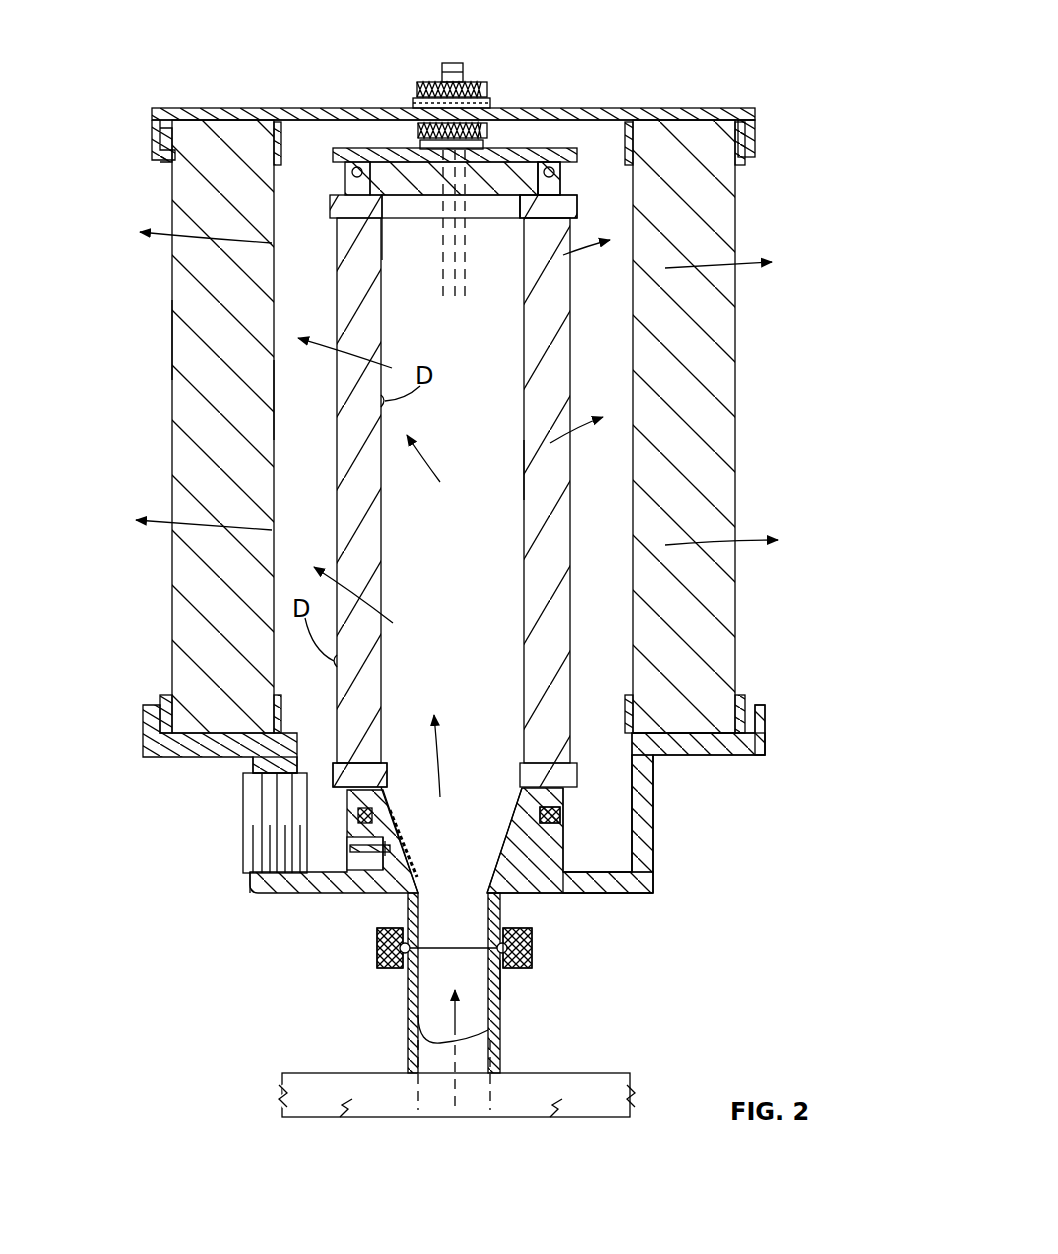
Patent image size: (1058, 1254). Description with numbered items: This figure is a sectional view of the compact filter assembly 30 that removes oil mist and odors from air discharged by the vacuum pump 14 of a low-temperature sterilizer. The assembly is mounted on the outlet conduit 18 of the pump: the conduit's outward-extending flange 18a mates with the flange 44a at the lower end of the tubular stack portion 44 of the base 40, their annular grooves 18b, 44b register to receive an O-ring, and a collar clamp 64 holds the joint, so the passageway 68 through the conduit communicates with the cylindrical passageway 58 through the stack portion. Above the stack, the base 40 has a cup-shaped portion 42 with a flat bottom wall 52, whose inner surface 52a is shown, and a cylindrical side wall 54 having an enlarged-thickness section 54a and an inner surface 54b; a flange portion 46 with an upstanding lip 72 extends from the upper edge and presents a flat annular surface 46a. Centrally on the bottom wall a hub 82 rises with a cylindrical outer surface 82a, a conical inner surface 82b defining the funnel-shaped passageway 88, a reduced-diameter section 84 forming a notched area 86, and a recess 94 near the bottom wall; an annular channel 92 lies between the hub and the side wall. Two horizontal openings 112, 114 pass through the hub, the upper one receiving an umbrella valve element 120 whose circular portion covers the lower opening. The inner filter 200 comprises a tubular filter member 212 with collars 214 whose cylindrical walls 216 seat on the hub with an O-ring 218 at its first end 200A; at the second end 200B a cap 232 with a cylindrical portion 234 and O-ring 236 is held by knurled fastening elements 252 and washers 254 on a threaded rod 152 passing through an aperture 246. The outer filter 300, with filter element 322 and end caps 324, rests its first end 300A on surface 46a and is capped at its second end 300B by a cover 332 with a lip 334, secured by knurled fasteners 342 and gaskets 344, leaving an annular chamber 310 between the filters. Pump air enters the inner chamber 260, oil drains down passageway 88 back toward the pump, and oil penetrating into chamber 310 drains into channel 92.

The vacuum pump 14 is at (590, 1073).
The outlet conduit 18 is at (408, 1020).
The outward-extending flange 18a is at (380, 958).
The annular groove 18b is at (408, 932).
The filter assembly 30 is at (785, 110).
The base 40 is at (670, 813).
The cup-shaped portion 42 is at (657, 826).
The tubular stack portion 44 is at (505, 905).
The outward-extending flange 44a is at (377, 940).
The annular groove 44b is at (505, 962).
The flange portion 46 is at (715, 753).
The flat annular surface 46a is at (692, 735).
The bottom wall 52 is at (615, 887).
The inner surface of bottom wall 52a is at (643, 850).
The cylindrical side wall 54 is at (647, 846).
The enlarged-thickness section 54a is at (262, 765).
The inner surface of side wall 54b is at (618, 807).
The cylindrical passageway 58 is at (440, 940).
The collar clamp 64 is at (535, 955).
The passageway 68 is at (472, 1012).
The collar or lip 72 is at (765, 726).
The hub 82 is at (545, 848).
The cylindrical outer surface 82a is at (597, 890).
The conical inner surface 82b is at (514, 830).
The reduced-diameter section 84 is at (360, 790).
The stepped or notched area 86 is at (347, 822).
The conical passageway 88 is at (463, 803).
The annular channel 92 is at (600, 820).
The recess or cavity 94 is at (300, 872).
The upper opening 112 is at (405, 834).
The lower opening 114 is at (395, 850).
The valve element 120 is at (407, 802).
The elongated threaded rod 152 is at (462, 68).
The inner filter 200 is at (575, 372).
The first end of inner filter 200A is at (548, 520).
The second end of inner filter 200B is at (528, 235).
The tubular filter member 212 is at (568, 470).
The annular collar 214 is at (577, 210).
The cylindrical wall 216 is at (560, 182).
The O-ring 218 is at (563, 820).
The cap 232 is at (355, 150).
The cylindrical portion 234 is at (410, 215).
The O-ring 236 is at (358, 168).
The aperture 246 is at (452, 292).
The knurled fastening element 252 is at (495, 130).
The washer 254 is at (483, 146).
The cylindrical inner chamber 260 is at (478, 422).
The outer filter 300 is at (742, 318).
The first end of outer filter 300A is at (207, 697).
The second end of outer filter 300B is at (200, 134).
The annular chamber 310 is at (300, 407).
The filter element 322 is at (190, 340).
The end cap 324 is at (157, 126).
The cover 332 is at (652, 108).
The downward-extending lip 334 is at (757, 137).
The knurled fastener 342 is at (428, 86).
The gasket 344 is at (482, 100).